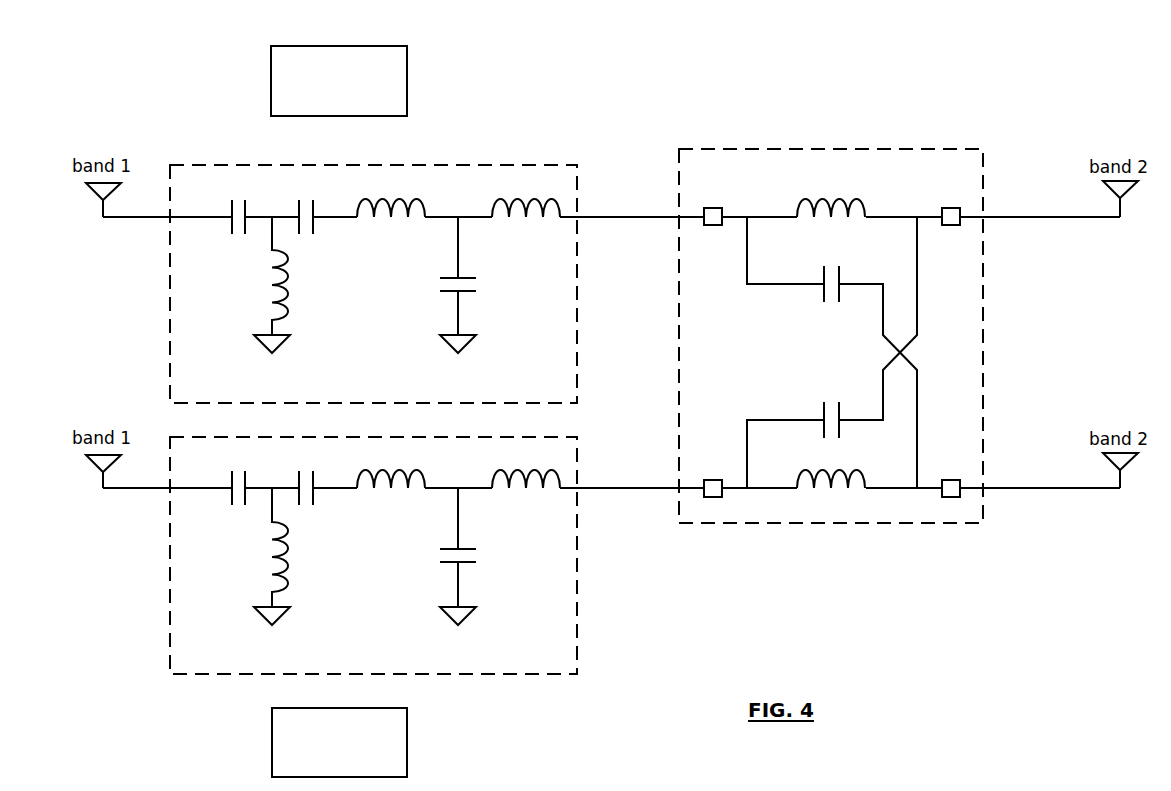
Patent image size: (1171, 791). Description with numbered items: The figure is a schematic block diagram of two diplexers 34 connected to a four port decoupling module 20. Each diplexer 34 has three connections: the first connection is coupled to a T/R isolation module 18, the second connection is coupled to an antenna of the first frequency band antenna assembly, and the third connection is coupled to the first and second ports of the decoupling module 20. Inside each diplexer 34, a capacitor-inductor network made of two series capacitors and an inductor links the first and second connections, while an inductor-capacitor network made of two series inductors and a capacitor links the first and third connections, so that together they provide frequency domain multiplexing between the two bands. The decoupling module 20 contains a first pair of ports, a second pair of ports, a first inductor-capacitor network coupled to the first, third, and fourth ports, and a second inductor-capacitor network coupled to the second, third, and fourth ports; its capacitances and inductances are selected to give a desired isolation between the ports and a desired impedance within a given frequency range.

The T/R isolation module 18 is at (340, 212).
The four port decoupling module 20 is at (965, 181).
The diplexer 34 is at (273, 395).